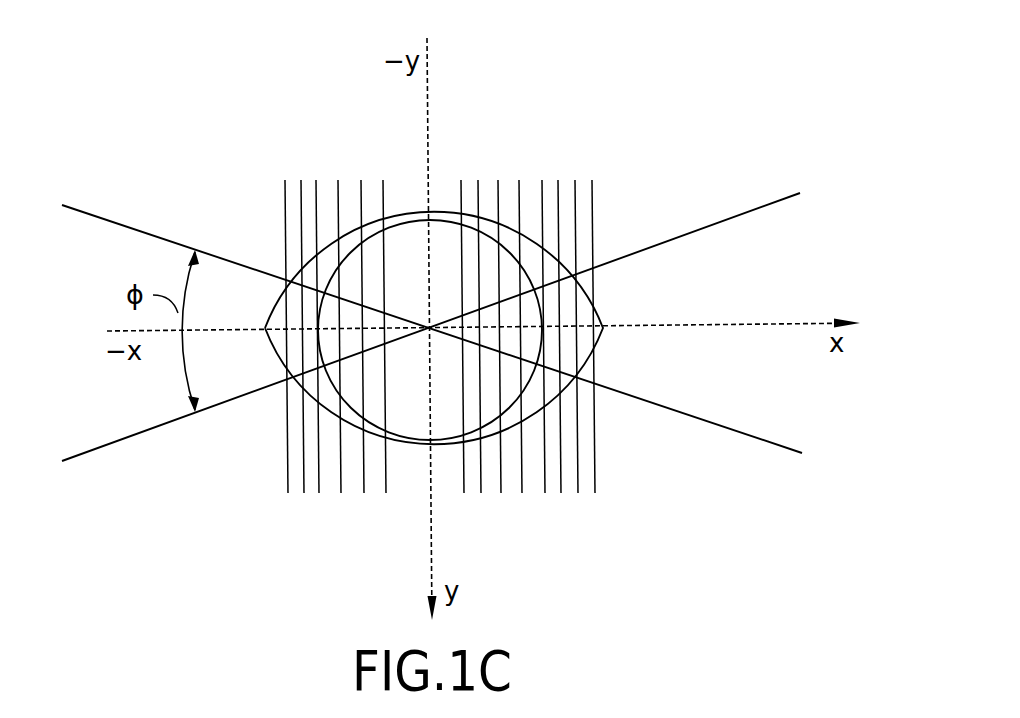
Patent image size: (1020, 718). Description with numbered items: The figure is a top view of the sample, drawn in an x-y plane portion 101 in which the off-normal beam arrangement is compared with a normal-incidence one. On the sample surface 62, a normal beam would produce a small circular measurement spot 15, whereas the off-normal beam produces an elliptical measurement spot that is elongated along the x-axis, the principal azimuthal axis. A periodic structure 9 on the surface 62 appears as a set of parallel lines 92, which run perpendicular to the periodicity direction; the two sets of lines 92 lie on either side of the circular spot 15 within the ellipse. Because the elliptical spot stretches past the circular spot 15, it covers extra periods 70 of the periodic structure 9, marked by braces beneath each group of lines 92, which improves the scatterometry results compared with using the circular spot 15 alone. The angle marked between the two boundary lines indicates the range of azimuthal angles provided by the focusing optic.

The x-y plane portion 101 is at (256, 103).
The measurement spot 15 is at (443, 232).
The periodic structure 9 is at (650, 140).
The sample surface 62 is at (651, 446).
The lines 92 is at (519, 180).
The extra periods 70 is at (285, 508).